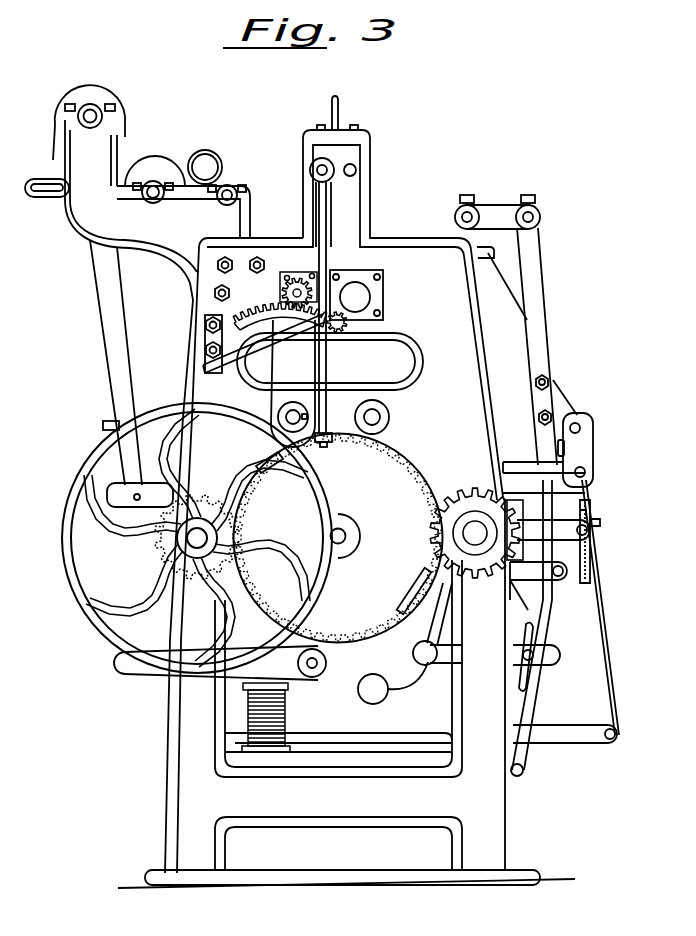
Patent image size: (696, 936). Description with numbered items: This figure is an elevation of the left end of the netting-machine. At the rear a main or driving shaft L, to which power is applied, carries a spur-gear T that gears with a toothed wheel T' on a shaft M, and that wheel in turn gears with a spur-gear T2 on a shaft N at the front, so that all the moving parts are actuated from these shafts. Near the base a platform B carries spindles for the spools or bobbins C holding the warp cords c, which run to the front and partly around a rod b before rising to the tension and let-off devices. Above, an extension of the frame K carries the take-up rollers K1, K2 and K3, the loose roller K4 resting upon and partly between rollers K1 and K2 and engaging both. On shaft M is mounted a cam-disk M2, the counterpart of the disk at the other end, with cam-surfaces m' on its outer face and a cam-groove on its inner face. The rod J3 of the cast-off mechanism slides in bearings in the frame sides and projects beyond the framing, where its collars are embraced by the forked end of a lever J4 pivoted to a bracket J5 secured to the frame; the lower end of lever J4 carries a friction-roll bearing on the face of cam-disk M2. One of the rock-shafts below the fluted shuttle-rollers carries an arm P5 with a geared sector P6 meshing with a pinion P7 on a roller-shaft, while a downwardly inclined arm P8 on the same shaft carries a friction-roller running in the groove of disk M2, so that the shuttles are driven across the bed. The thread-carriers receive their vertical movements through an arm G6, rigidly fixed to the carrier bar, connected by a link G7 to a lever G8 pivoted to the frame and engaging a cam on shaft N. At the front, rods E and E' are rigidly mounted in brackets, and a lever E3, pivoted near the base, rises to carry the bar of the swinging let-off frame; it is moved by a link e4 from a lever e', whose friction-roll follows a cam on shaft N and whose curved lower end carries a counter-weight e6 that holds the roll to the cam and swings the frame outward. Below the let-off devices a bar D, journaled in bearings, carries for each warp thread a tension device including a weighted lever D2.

The bracket arm K is at (85, 218).
The take-up roller K1 is at (230, 184).
The take-up roller K2 is at (152, 160).
The take-up roller K3 is at (100, 77).
The loose or free roller K4 is at (201, 160).
The rod J3 is at (310, 172).
The lever J4 is at (328, 257).
The bracket J5 is at (227, 369).
The arm P5 is at (316, 366).
The geared sector P6 is at (272, 312).
The pinion P7 is at (308, 283).
The arm P8 is at (330, 421).
The main or driving shaft L is at (190, 543).
The spur-gear T is at (197, 526).
The toothed wheel T' is at (338, 538).
The spur-gear T2 is at (486, 498).
The shaft N is at (475, 541).
The shaft M is at (352, 536).
The cam-disk M2 is at (372, 640).
The cam-surfaces m' is at (343, 533).
The arm G6 is at (490, 210).
The link G7 is at (542, 308).
The lever G8 is at (527, 573).
The rod E is at (558, 451).
The rod E' is at (598, 475).
The lever E3 is at (527, 694).
The bar D is at (600, 522).
The weighted lever D2 is at (592, 574).
The lever e' is at (439, 614).
The link e4 is at (447, 661).
The counter-weight e6 is at (362, 690).
The warp cords or threads c is at (613, 701).
The rod b is at (618, 735).
The spools or bobbins C is at (288, 716).
The platform B is at (350, 752).